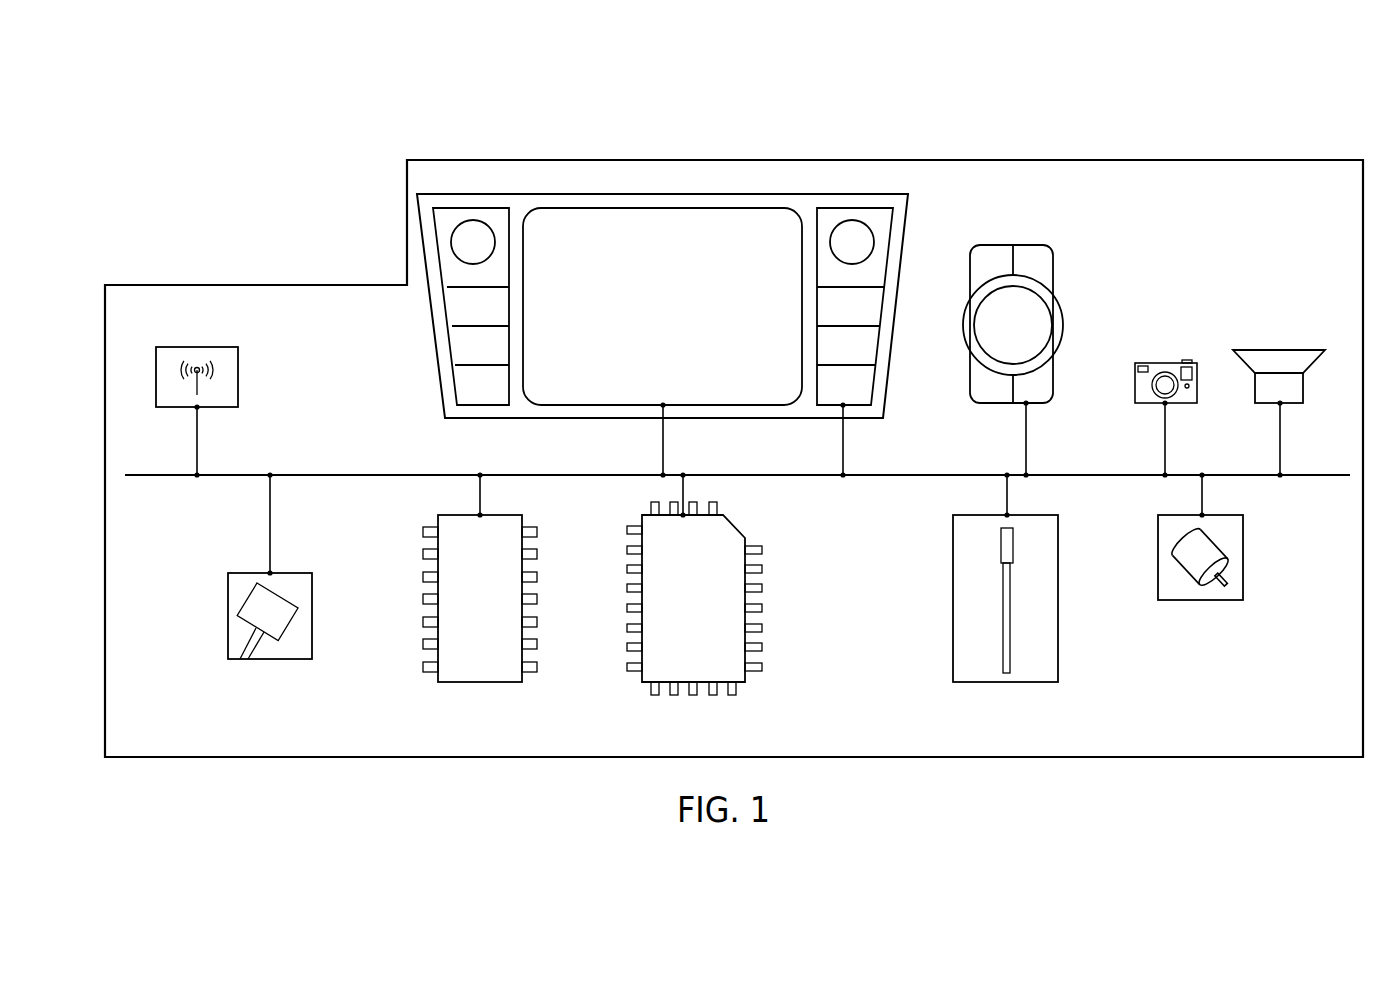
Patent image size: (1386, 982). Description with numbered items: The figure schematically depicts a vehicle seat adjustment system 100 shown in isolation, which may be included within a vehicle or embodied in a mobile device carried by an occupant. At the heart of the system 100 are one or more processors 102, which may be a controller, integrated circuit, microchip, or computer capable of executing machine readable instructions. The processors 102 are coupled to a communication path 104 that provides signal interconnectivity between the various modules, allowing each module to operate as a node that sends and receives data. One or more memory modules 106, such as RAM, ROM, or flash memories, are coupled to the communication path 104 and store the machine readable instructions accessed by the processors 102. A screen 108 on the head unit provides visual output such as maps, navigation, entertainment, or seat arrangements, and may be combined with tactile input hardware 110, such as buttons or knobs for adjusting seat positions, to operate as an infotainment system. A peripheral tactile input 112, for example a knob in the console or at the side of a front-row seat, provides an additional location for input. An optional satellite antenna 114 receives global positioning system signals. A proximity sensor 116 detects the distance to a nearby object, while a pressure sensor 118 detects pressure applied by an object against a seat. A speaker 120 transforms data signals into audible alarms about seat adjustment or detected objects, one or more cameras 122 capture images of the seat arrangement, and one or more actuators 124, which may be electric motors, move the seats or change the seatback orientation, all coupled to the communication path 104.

The vehicle seat adjustment system 100 is at (1162, 137).
The processors 102 is at (645, 687).
The communication path 104 is at (385, 475).
The memory modules 106 is at (482, 682).
The screen 108 is at (650, 230).
The tactile input hardware 110 is at (445, 217).
The peripheral tactile input 112 is at (1003, 245).
The satellite antenna 114 is at (1007, 682).
The proximity sensor 116 is at (197, 347).
The pressure sensor 118 is at (272, 659).
The speaker 120 is at (1280, 350).
The cameras 122 is at (1165, 363).
The actuators 124 is at (1200, 600).